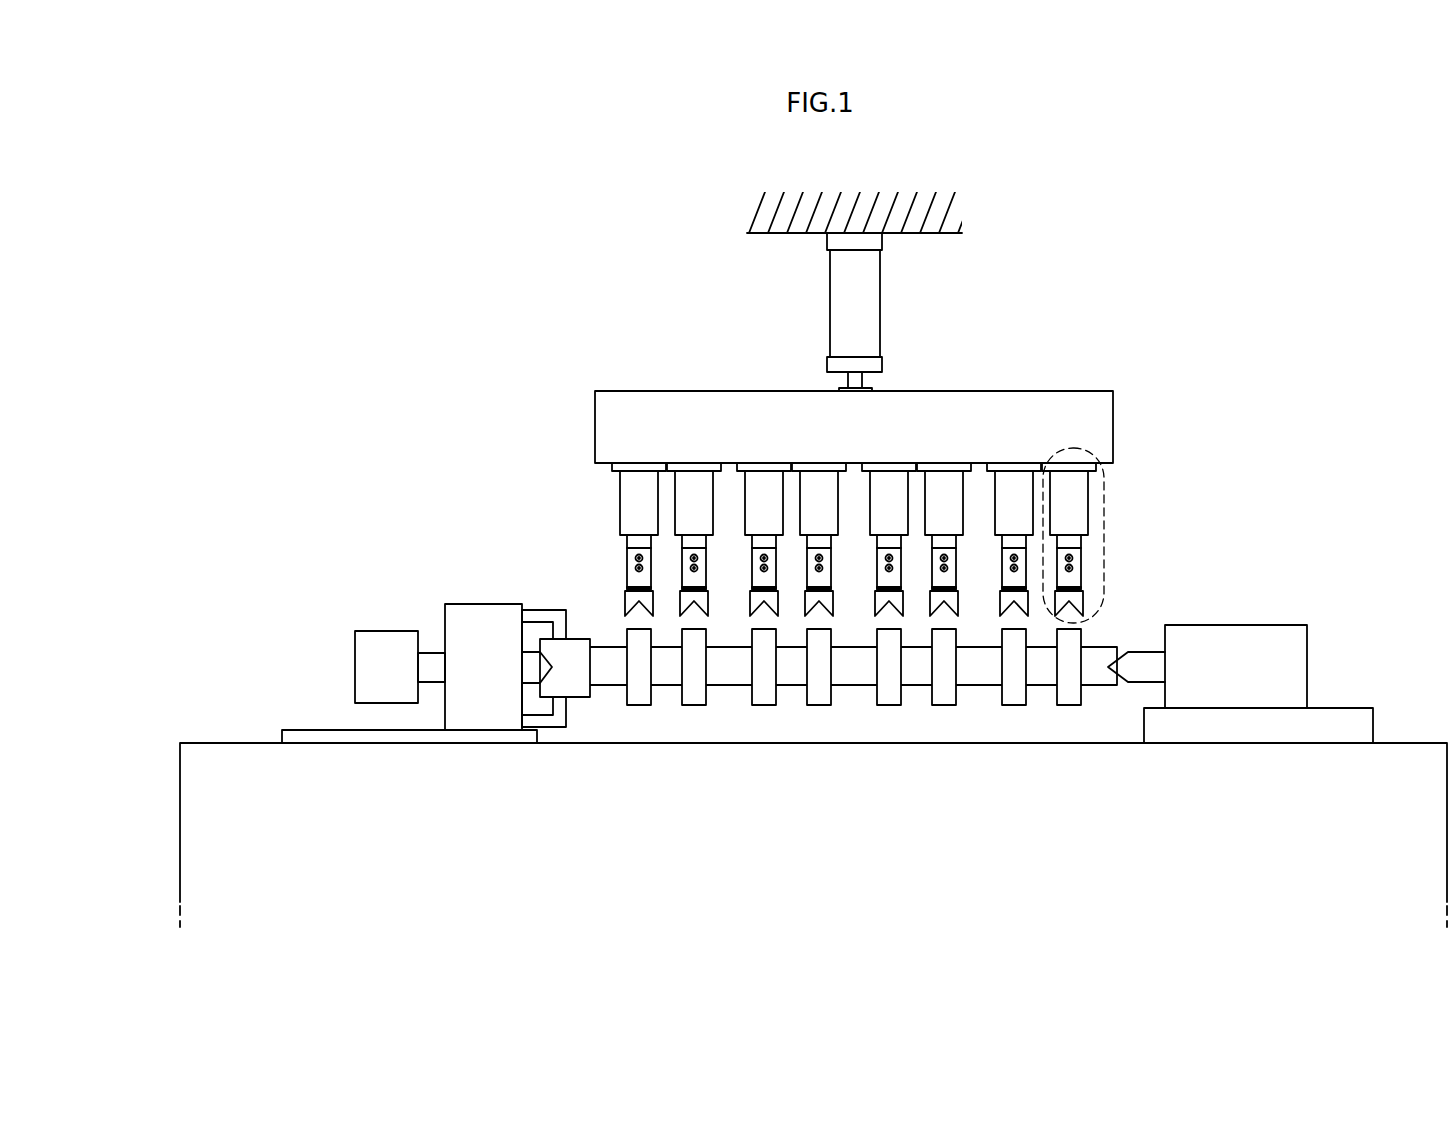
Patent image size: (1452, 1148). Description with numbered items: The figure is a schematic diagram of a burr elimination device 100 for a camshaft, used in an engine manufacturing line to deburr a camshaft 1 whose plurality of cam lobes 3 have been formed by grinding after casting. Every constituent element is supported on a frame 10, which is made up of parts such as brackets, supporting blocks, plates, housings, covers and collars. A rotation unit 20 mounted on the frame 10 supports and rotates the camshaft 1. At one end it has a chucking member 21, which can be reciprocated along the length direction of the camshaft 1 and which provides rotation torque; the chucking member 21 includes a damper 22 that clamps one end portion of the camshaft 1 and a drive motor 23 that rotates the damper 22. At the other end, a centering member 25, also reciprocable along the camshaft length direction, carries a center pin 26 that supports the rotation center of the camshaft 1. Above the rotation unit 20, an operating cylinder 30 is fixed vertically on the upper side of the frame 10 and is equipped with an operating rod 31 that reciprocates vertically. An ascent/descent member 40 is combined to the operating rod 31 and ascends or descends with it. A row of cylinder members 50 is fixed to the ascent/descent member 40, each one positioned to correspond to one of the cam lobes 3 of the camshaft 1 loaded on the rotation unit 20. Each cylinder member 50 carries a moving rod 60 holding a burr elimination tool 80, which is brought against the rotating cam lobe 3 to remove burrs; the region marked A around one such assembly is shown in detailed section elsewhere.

The burr elimination device 100 is at (871, 169).
The frame 10 is at (940, 214).
The operating cylinder 30 is at (901, 295).
The operating rod 31 is at (855, 379).
The ascent/descent member 40 is at (1113, 425).
The cylinder members 50 is at (606, 494).
The moving rod 60 is at (606, 540).
The burr elimination tool 80 is at (606, 595).
The area A is at (1104, 508).
The camshaft 1 is at (857, 704).
The cam lobes 3 is at (762, 705).
The rotation unit 20 is at (436, 701).
The chucking member 21 is at (481, 702).
The damper 22 is at (551, 720).
The drive motor 23 is at (388, 695).
The centering member 25 is at (1330, 652).
The center pin 26 is at (1133, 662).